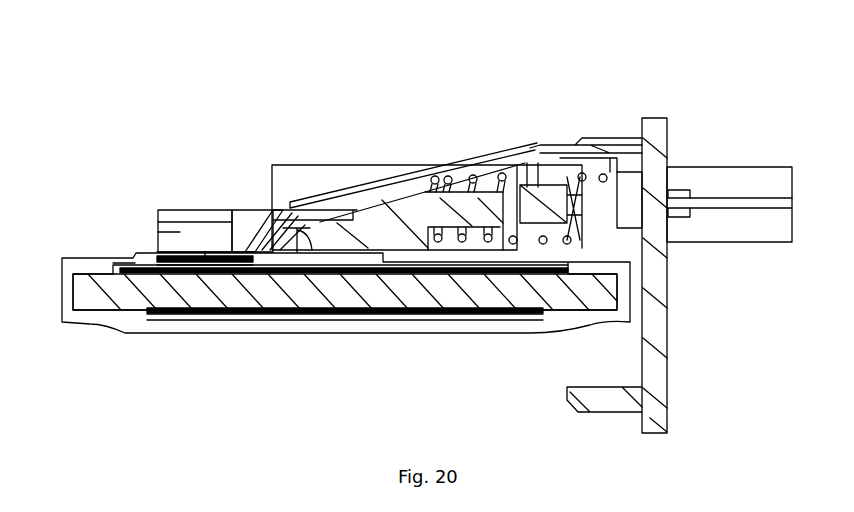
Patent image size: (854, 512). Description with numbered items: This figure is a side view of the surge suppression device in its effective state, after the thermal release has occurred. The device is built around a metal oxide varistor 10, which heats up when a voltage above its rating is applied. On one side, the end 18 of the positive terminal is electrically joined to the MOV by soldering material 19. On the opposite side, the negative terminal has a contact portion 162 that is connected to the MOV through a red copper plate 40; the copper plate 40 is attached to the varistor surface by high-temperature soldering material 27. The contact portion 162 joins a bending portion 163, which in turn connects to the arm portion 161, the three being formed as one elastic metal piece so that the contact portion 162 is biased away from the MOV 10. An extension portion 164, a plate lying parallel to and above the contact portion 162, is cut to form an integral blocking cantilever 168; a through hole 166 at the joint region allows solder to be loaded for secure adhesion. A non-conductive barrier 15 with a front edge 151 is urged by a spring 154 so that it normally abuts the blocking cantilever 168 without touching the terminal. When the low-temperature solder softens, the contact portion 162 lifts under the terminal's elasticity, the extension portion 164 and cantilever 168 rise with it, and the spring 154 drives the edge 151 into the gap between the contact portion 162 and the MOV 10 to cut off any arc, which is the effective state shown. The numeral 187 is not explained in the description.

The metal oxide varistor 10 is at (465, 300).
The non-conductive barrier 15 is at (388, 241).
The end of positive terminal 18 is at (365, 316).
The soldering material 19 is at (147, 311).
The high-temperature soldering material 27 is at (115, 270).
The red copper plate 40 is at (125, 268).
The edge of barrier 151 is at (292, 227).
The spring 154 is at (500, 177).
The arm portion 161 is at (453, 163).
The contact portion 162 is at (212, 255).
The bending portion 163 is at (270, 216).
The extension portion 164 is at (182, 210).
The through hole 166 is at (196, 252).
The blocking cantilever 168 is at (284, 222).
The side wall 187 is at (158, 228).